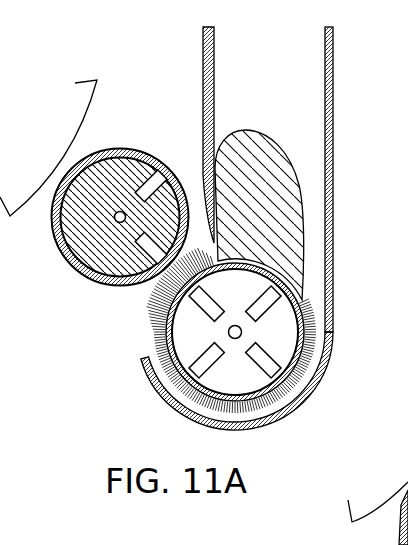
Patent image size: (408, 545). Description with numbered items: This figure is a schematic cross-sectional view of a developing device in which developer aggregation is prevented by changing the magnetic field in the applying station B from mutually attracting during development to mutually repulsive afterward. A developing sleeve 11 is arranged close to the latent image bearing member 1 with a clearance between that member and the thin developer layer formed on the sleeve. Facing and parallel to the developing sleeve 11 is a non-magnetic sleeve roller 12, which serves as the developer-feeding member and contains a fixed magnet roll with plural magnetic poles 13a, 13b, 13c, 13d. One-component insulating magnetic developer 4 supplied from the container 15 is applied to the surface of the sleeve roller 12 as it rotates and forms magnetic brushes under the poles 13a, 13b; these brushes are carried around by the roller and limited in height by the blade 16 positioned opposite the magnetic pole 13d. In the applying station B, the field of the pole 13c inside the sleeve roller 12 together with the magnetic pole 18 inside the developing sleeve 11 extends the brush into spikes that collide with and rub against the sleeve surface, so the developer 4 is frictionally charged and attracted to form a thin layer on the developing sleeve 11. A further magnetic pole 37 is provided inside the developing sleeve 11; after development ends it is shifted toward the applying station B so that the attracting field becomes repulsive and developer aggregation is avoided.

The latent image bearing member 1 is at (88, 95).
The one-component insulating magnetic developer 4 is at (266, 157).
The developing sleeve 11 is at (73, 265).
The sleeve roller 12 is at (287, 382).
The magnetic pole 13a is at (255, 358).
The magnetic pole 13b is at (265, 306).
The magnetic pole 13c is at (220, 309).
The magnetic pole 13d is at (202, 353).
The container 15 is at (333, 112).
The blade 16 is at (203, 187).
The magnetic pole 18 is at (139, 246).
The magnetic pole 37 is at (137, 191).
The applying station B is at (155, 290).